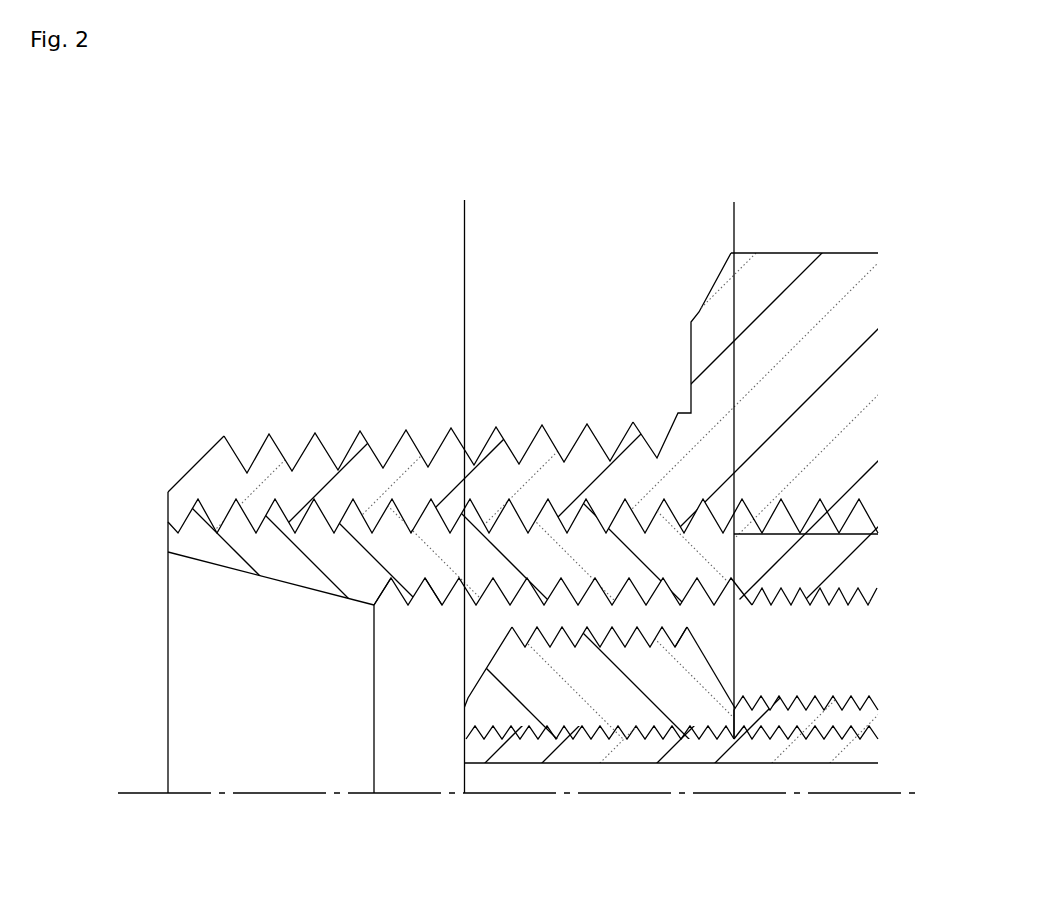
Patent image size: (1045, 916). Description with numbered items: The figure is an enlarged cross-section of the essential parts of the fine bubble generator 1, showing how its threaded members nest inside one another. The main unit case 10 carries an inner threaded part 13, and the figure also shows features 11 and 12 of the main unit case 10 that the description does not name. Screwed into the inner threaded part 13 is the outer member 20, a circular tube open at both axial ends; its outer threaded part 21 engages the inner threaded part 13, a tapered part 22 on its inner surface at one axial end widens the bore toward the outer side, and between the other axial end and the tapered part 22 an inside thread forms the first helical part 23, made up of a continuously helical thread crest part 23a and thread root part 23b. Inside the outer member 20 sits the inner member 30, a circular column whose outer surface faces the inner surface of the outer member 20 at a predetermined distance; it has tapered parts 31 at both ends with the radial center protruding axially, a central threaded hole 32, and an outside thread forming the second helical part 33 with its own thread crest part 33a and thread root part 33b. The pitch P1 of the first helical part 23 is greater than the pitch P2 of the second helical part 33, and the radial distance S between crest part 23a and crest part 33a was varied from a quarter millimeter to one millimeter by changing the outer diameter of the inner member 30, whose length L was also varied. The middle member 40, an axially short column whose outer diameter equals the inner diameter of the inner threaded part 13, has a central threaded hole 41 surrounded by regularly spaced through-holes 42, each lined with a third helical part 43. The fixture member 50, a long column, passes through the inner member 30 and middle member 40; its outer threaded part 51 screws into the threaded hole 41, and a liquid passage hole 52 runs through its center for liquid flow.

The fine bubble generator 1 is at (407, 247).
The main unit case 10 is at (788, 252).
The end face of first member 11 is at (855, 270).
The external thread 12 is at (318, 460).
The inner threaded part 13 is at (410, 512).
The outer member 20 is at (163, 527).
The outer threaded part 21 is at (253, 487).
The tapered part 22 is at (270, 752).
The first helical part 23 is at (539, 537).
The thread crest part 23a is at (410, 600).
The thread root part 23b is at (428, 600).
The inner member 30 is at (467, 722).
The tapered part 31 is at (479, 683).
The threaded hole 32 is at (702, 727).
The second helical part 33 is at (660, 731).
The thread crest part 33a is at (688, 627).
The thread root part 33b is at (701, 650).
The middle member 40 is at (873, 509).
The threaded hole 41 is at (812, 718).
The through-hole 42 is at (845, 630).
The third helical part 43 is at (857, 690).
The fixture member 50 is at (470, 763).
The outer threaded part 51 is at (765, 740).
The liquid passage hole 52 is at (840, 777).
The length of the inner member L is at (734, 211).
The distance between first and second helical parts S is at (505, 605).
The pitch of the first helical part P1 is at (580, 607).
The pitch of the second helical part P2 is at (638, 627).